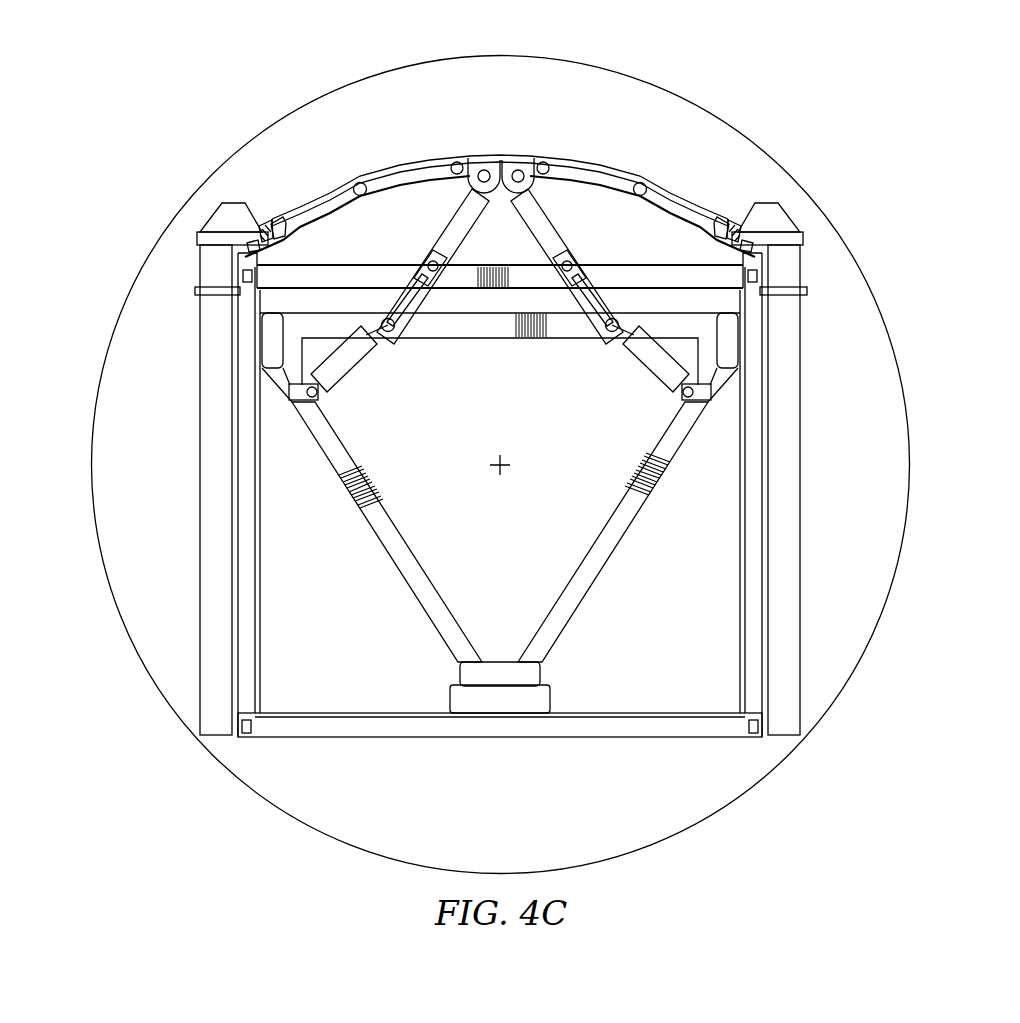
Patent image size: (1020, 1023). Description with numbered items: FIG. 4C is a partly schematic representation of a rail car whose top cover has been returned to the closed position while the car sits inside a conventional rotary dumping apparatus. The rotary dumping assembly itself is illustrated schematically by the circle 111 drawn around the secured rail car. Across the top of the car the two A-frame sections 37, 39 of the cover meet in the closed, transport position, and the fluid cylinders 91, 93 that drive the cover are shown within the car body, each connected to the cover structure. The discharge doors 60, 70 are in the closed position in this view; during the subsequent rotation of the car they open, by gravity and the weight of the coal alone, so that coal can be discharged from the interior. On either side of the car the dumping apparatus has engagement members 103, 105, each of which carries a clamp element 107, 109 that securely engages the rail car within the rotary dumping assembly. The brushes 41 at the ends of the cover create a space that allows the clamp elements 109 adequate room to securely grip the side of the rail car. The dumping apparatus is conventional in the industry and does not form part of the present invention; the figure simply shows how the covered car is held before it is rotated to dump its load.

The circle 111 is at (563, 60).
The A-frame section 37 is at (360, 156).
The A-frame section 39 is at (627, 151).
The discharge door 70 is at (413, 160).
The discharge door 60 is at (320, 191).
The brushes 41 is at (270, 223).
The clamp element 109 is at (205, 218).
The clamp element 107 is at (795, 218).
The engagement member 105 is at (215, 572).
The engagement member 103 is at (790, 572).
The fluid cylinder 91 is at (353, 368).
The fluid cylinder 93 is at (647, 368).